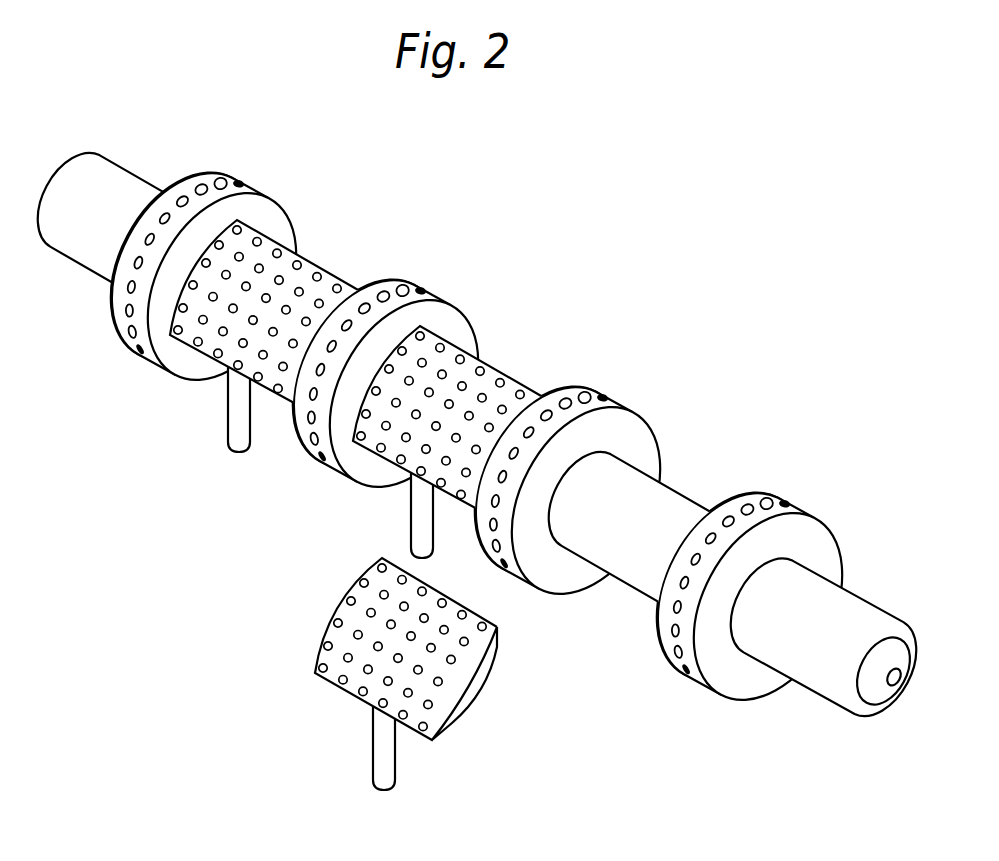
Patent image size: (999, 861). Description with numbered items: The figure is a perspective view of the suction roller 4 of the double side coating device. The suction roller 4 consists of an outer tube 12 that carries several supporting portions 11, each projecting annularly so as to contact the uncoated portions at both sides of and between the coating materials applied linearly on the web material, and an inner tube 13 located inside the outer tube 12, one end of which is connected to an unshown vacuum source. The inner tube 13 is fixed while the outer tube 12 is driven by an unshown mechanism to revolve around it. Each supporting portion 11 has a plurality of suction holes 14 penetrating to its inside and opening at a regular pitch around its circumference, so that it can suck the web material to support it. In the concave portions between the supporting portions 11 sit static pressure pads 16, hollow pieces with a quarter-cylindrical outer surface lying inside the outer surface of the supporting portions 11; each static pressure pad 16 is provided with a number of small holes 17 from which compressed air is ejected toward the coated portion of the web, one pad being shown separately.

The suction roller 4 is at (504, 442).
The supporting portion 11 is at (477, 410).
The outer tube 12 is at (850, 652).
The inner tube 13 is at (893, 690).
The suction hole 14 is at (458, 395).
The static pressure pad 16 is at (362, 455).
The small hole 17 is at (295, 544).